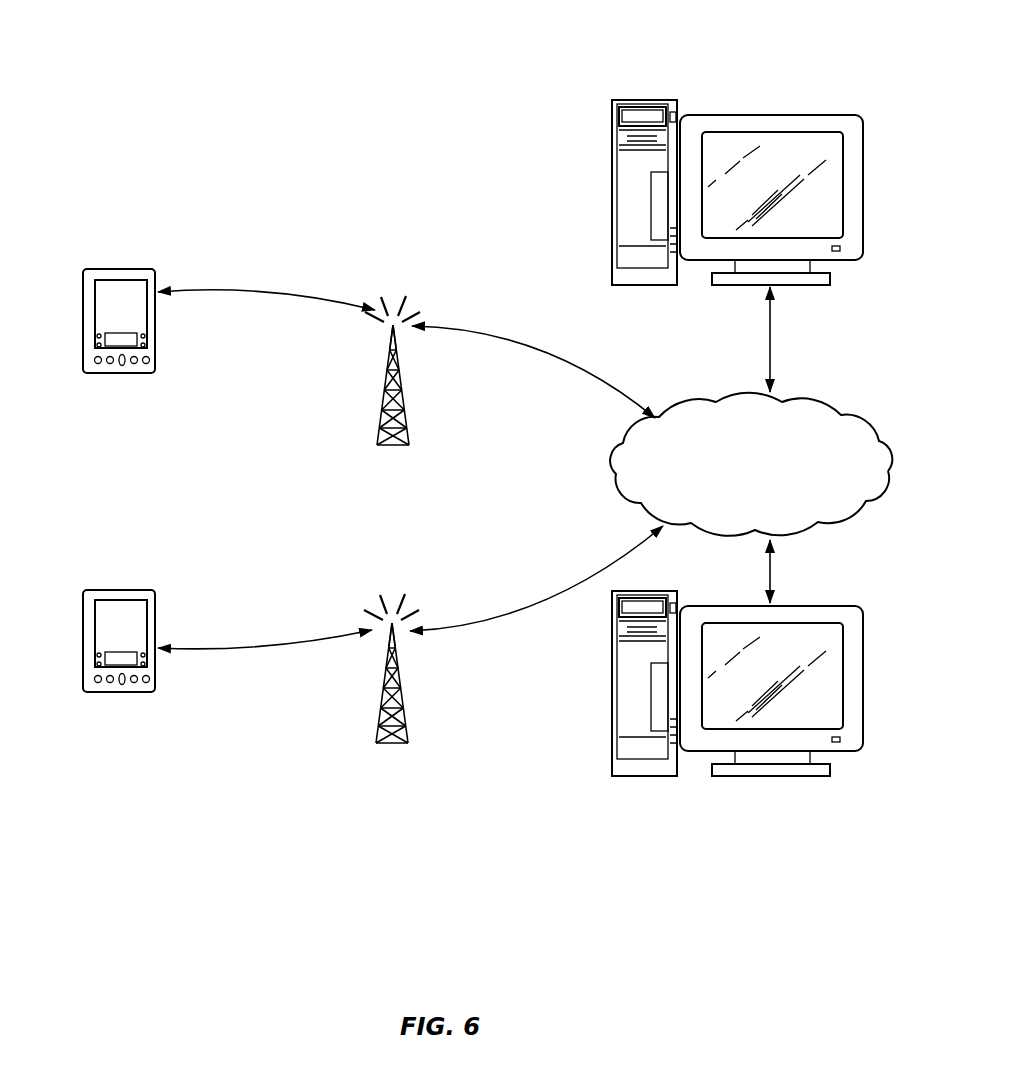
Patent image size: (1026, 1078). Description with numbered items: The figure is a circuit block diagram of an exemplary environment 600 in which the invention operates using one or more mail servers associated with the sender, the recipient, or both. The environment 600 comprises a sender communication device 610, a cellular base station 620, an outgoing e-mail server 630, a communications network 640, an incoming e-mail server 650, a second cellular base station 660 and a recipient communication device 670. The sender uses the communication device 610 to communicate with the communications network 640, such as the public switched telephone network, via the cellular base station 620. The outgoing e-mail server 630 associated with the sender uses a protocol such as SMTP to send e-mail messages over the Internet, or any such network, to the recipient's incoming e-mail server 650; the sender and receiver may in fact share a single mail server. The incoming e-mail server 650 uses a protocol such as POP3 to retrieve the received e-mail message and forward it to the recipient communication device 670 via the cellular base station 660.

The environment 600 is at (218, 82).
The sender communication device 610 is at (127, 270).
The cellular base station 620 is at (404, 412).
The outgoing e-mail server 630 is at (810, 117).
The communications network 640 is at (832, 398).
The incoming e-mail server 650 is at (808, 608).
The cellular base station 660 is at (404, 710).
The recipient communication device 670 is at (125, 591).